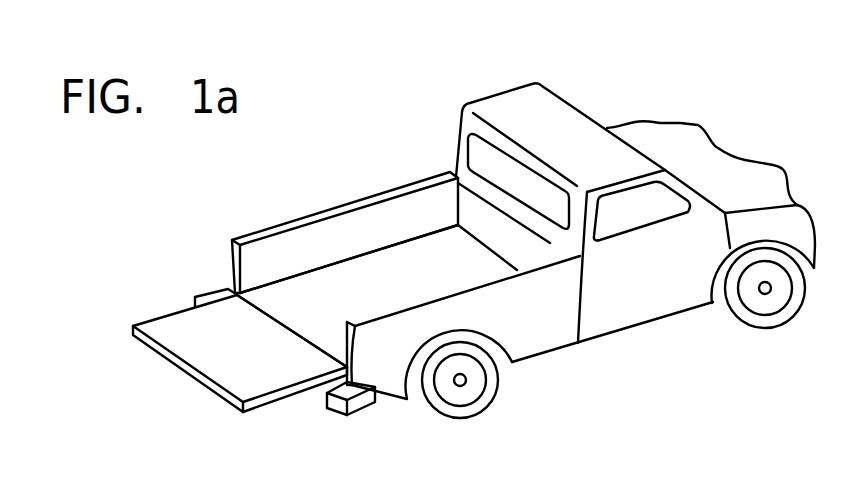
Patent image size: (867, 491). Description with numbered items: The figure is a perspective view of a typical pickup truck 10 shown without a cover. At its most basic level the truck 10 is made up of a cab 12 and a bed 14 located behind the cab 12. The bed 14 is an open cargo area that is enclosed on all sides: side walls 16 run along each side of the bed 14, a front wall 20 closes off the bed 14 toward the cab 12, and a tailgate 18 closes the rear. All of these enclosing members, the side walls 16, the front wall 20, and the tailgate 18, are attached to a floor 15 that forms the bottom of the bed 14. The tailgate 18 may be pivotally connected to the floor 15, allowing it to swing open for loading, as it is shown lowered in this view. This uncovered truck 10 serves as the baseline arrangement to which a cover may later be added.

The pickup truck 10 is at (455, 484).
The cab 12 is at (552, 117).
The bed 14 is at (375, 195).
The floor 15 is at (297, 305).
The side walls 16 is at (302, 248).
The tailgate 18 is at (217, 362).
The front wall 20 is at (523, 252).